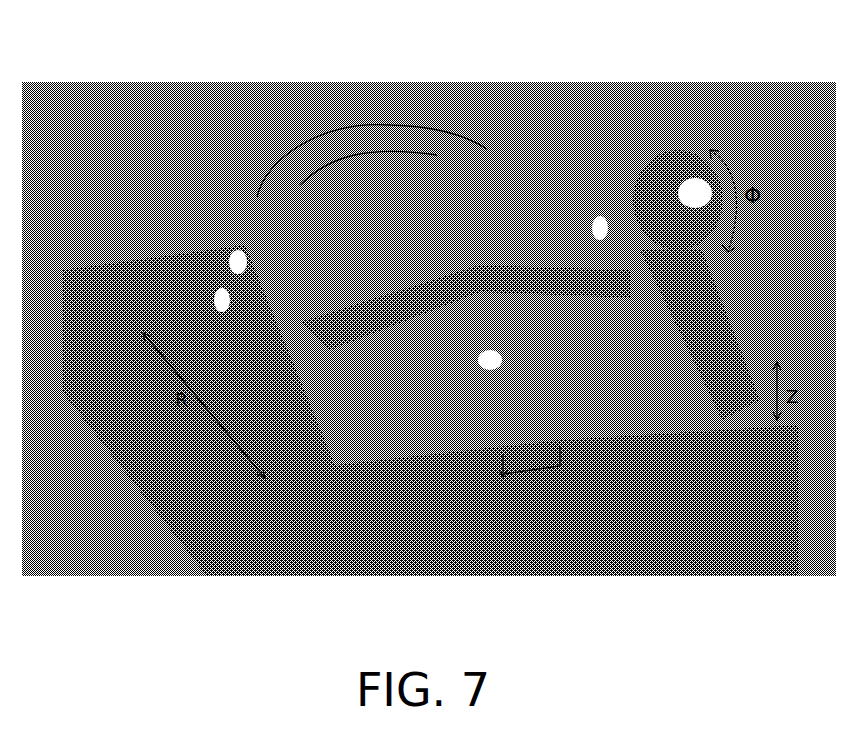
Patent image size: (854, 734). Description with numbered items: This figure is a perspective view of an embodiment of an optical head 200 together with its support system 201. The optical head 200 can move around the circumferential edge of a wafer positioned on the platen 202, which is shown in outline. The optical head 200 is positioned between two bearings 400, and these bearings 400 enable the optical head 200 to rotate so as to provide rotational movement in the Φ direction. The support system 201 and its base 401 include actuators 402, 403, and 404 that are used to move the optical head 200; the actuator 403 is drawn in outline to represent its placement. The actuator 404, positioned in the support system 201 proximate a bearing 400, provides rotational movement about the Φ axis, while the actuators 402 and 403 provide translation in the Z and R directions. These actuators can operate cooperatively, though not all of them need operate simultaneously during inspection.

The optical head 200 is at (447, 169).
The support system 201 is at (247, 253).
The platen 202 is at (373, 133).
The bearings 400 is at (217, 287).
The base 401 is at (340, 463).
The actuator 402 is at (497, 373).
The actuator 403 is at (548, 467).
The actuator 404 is at (690, 172).